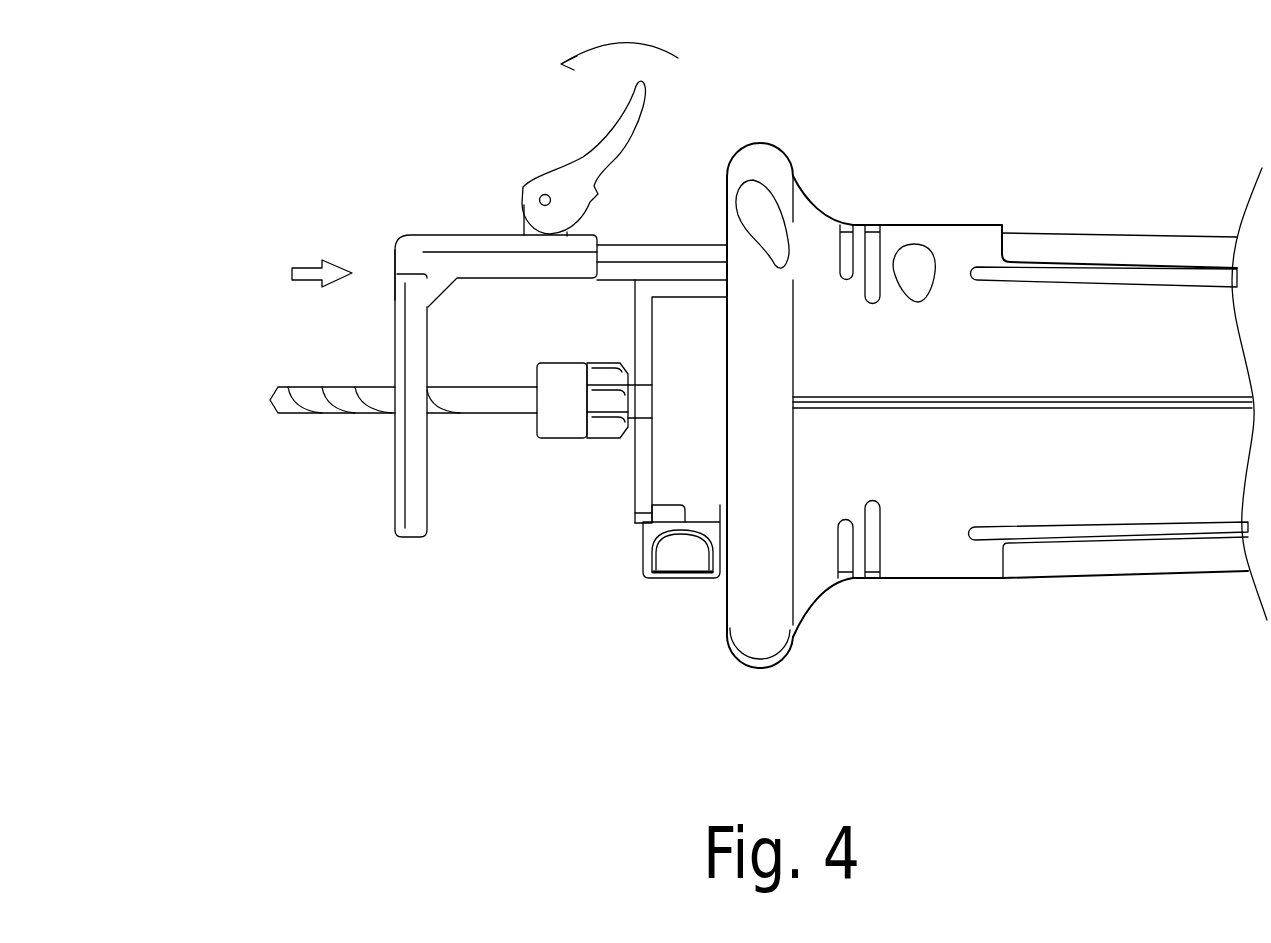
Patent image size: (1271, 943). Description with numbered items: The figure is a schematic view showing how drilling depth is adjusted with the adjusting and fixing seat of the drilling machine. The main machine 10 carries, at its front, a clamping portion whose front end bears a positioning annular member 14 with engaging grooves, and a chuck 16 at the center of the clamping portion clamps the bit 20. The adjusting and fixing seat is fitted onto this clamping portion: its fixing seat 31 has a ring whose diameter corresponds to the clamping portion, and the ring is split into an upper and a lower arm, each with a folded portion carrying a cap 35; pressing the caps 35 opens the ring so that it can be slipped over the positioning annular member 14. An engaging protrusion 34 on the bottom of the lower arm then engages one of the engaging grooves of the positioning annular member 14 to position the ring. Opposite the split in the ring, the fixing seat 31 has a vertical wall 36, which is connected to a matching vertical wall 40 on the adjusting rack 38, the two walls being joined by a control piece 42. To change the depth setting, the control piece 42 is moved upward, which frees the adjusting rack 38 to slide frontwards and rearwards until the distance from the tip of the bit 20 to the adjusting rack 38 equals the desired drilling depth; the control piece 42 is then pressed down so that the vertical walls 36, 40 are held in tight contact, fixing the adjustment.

The main machine 10 is at (1097, 253).
The positioning annular member 14 is at (641, 315).
The chuck 16 is at (565, 430).
The bit 20 is at (285, 408).
The fixing seat 31 is at (707, 330).
The engaging protrusion 34 is at (638, 518).
The cap 35 is at (680, 565).
The vertical wall 36 is at (628, 255).
The adjusting rack 38 is at (412, 530).
The vertical wall 40 is at (455, 240).
The control piece 42 is at (627, 122).